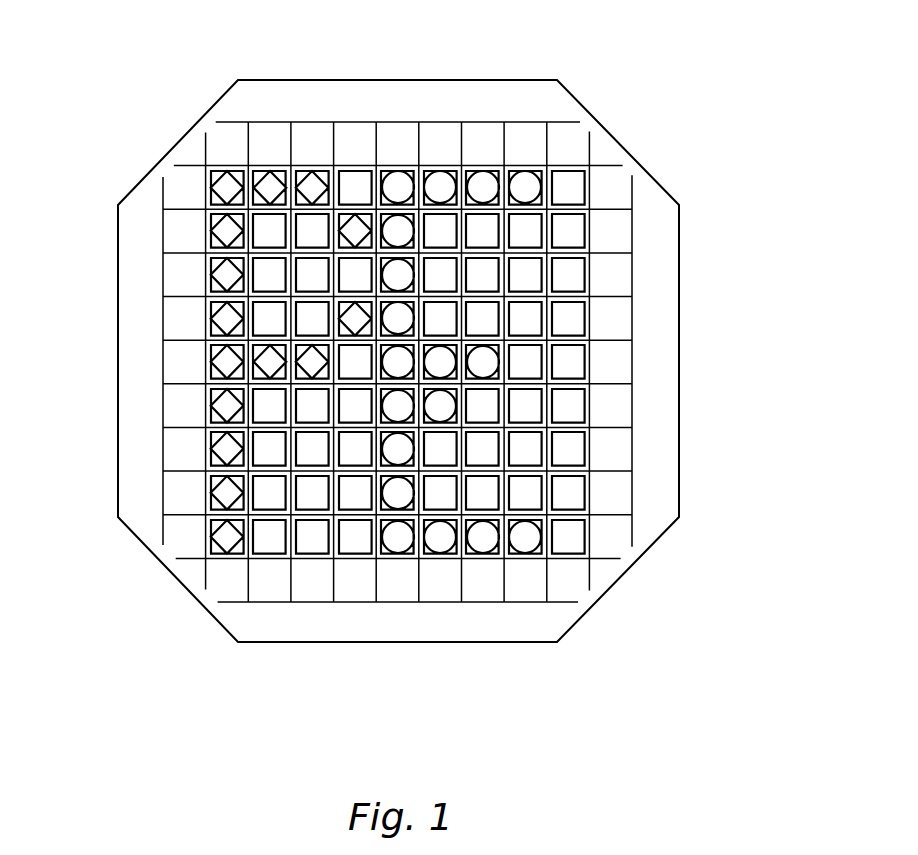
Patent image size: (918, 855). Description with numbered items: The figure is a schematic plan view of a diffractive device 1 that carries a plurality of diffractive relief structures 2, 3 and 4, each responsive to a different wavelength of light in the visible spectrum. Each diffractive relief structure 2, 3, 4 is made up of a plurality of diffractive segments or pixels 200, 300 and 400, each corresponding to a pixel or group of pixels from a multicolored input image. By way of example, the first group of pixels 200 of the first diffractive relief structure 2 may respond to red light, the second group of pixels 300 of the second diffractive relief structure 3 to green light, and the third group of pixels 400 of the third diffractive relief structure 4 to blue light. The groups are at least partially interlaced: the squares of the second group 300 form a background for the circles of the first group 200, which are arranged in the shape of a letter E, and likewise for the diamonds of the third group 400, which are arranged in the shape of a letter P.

The diffractive device 1 is at (695, 90).
The first diffractive relief structure 2 is at (436, 570).
The second diffractive relief structure 3 is at (598, 278).
The third diffractive relief structure 4 is at (207, 504).
The first group of diffractive segments or pixels 200 is at (482, 185).
The second group of diffractive segments or pixels 300 is at (353, 188).
The third group of diffractive segments or pixels 400 is at (223, 405).